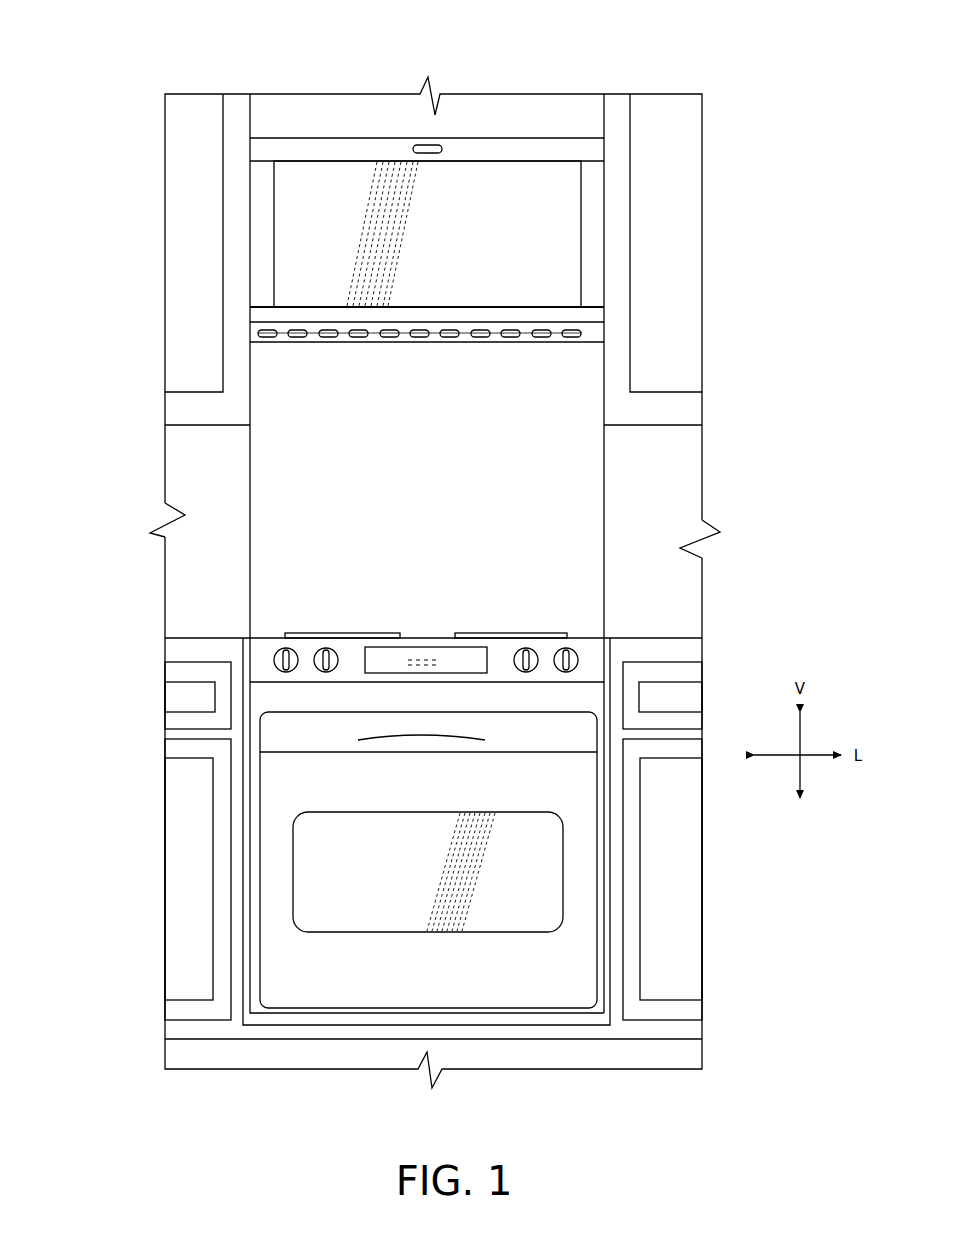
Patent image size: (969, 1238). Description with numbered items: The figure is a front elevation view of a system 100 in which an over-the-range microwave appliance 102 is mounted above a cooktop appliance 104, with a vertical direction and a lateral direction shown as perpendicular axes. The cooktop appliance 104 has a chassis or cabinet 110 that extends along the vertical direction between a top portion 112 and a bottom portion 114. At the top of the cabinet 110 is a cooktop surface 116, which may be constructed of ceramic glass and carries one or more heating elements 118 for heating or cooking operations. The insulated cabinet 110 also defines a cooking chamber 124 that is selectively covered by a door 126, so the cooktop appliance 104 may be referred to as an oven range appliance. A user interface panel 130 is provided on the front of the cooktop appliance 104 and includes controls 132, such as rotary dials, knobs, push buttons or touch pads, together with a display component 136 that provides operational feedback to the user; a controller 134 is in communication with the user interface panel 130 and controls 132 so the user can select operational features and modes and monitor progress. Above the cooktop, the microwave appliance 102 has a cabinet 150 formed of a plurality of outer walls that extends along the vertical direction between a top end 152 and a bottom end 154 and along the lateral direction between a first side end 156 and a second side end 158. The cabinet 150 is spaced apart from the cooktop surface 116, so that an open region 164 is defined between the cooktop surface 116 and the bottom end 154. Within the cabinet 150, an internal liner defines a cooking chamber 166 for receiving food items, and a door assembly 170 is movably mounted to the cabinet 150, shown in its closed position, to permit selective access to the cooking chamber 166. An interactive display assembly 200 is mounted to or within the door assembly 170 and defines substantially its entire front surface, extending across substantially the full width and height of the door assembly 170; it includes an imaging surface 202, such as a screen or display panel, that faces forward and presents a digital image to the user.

The system 100 is at (107, 148).
The microwave appliance 102 is at (467, 528).
The cooktop appliance 104 is at (229, 855).
The cabinet 110 is at (413, 884).
The top portion 112 is at (417, 828).
The bottom portion 114 is at (290, 1032).
The cooktop surface 116 is at (268, 632).
The heating elements 118 is at (342, 633).
The cooking chamber 124 is at (411, 908).
The door 126 is at (585, 878).
The user interface panel 130 is at (594, 642).
The controls 132 is at (584, 660).
The controller 134 is at (421, 633).
The display component 136 is at (463, 633).
The cabinet 150 is at (606, 172).
The top end 152 is at (362, 135).
The bottom end 154 is at (590, 346).
The first side end 156 is at (612, 295).
The second side end 158 is at (244, 283).
The open region 164 is at (348, 490).
The cooking chamber 166 is at (306, 196).
The door assembly 170 is at (568, 148).
The interactive display assembly 200 is at (490, 180).
The imaging surface 202 is at (402, 287).